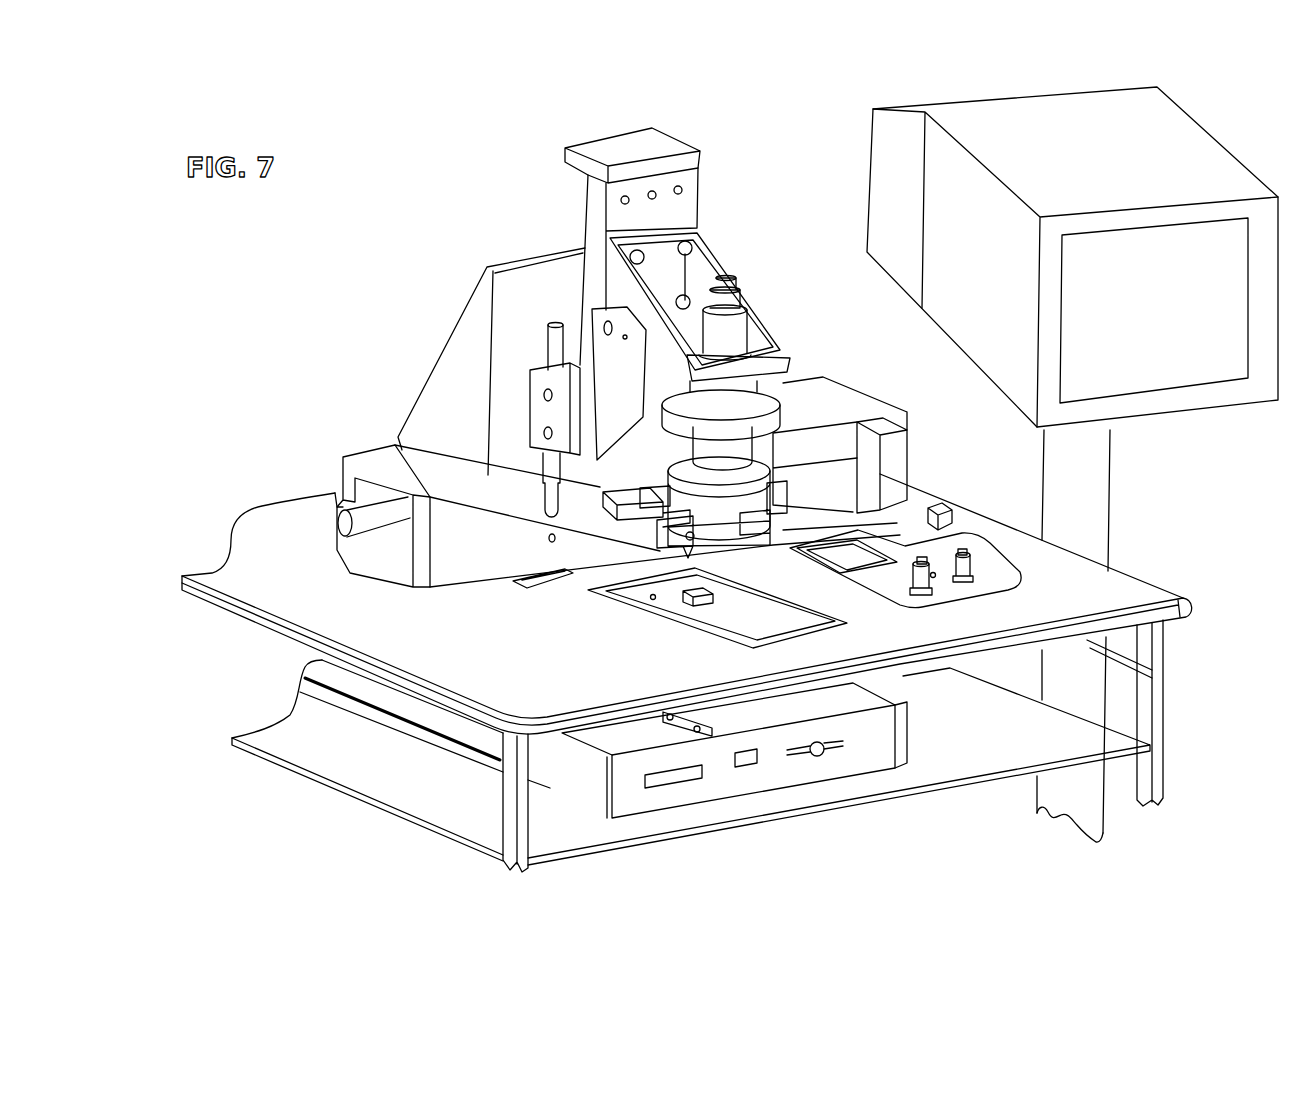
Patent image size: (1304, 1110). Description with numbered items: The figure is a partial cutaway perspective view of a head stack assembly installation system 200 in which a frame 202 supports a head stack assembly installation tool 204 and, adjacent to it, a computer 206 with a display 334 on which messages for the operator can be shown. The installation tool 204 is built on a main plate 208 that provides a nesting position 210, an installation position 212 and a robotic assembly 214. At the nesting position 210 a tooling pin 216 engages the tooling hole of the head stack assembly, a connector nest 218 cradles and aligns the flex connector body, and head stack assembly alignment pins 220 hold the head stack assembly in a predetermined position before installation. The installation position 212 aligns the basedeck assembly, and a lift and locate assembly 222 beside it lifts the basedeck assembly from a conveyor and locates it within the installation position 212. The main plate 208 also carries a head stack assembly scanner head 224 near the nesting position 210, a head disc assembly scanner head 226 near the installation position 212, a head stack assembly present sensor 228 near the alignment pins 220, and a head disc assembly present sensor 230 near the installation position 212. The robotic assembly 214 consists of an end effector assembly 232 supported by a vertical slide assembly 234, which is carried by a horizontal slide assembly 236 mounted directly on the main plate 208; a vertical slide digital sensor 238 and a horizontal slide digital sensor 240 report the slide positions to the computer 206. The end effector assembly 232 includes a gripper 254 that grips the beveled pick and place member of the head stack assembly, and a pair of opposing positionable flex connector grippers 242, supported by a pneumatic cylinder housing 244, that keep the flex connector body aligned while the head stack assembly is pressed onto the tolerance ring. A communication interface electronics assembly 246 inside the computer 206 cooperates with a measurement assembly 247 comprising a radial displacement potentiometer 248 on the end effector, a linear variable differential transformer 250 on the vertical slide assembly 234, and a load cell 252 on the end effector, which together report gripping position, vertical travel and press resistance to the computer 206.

The head stack assembly installation system 200 is at (783, 170).
The frame 202 is at (1063, 737).
The head stack assembly installation tool 204 is at (288, 583).
The computer 206 is at (872, 750).
The main plate 208 is at (1140, 583).
The nesting position 210 is at (1023, 580).
The installation position 212 is at (590, 607).
The robotic assembly 214 is at (510, 262).
The tooling pin 216 is at (918, 557).
The connector nest 218 is at (898, 528).
The head stack assembly alignment pins 220 is at (970, 572).
The lift and locate assembly 222 is at (752, 610).
The head stack assembly scanner head 224 is at (948, 505).
The head disc assembly scanner head 226 is at (702, 598).
The head stack assembly present sensor 228 is at (935, 568).
The head disc assembly present sensor 230 is at (652, 596).
The end effector assembly 232 is at (777, 332).
The vertical slide assembly 234 is at (697, 201).
The horizontal slide assembly 236 is at (840, 389).
The vertical slide digital sensor 238 is at (597, 467).
The horizontal slide digital sensor 240 is at (895, 440).
The pair of opposing positionable flex connector grippers 242 is at (775, 524).
The pneumatic cylinder housing 244 is at (783, 507).
The communication interface electronics assembly 246 is at (705, 738).
The measurement assembly 247 is at (521, 385).
The radial displacement potentiometer 248 is at (630, 531).
The linear variable differential transformer 250 is at (540, 502).
The load cell 252 is at (767, 410).
The gripper 254 is at (717, 503).
The display 334 is at (850, 178).